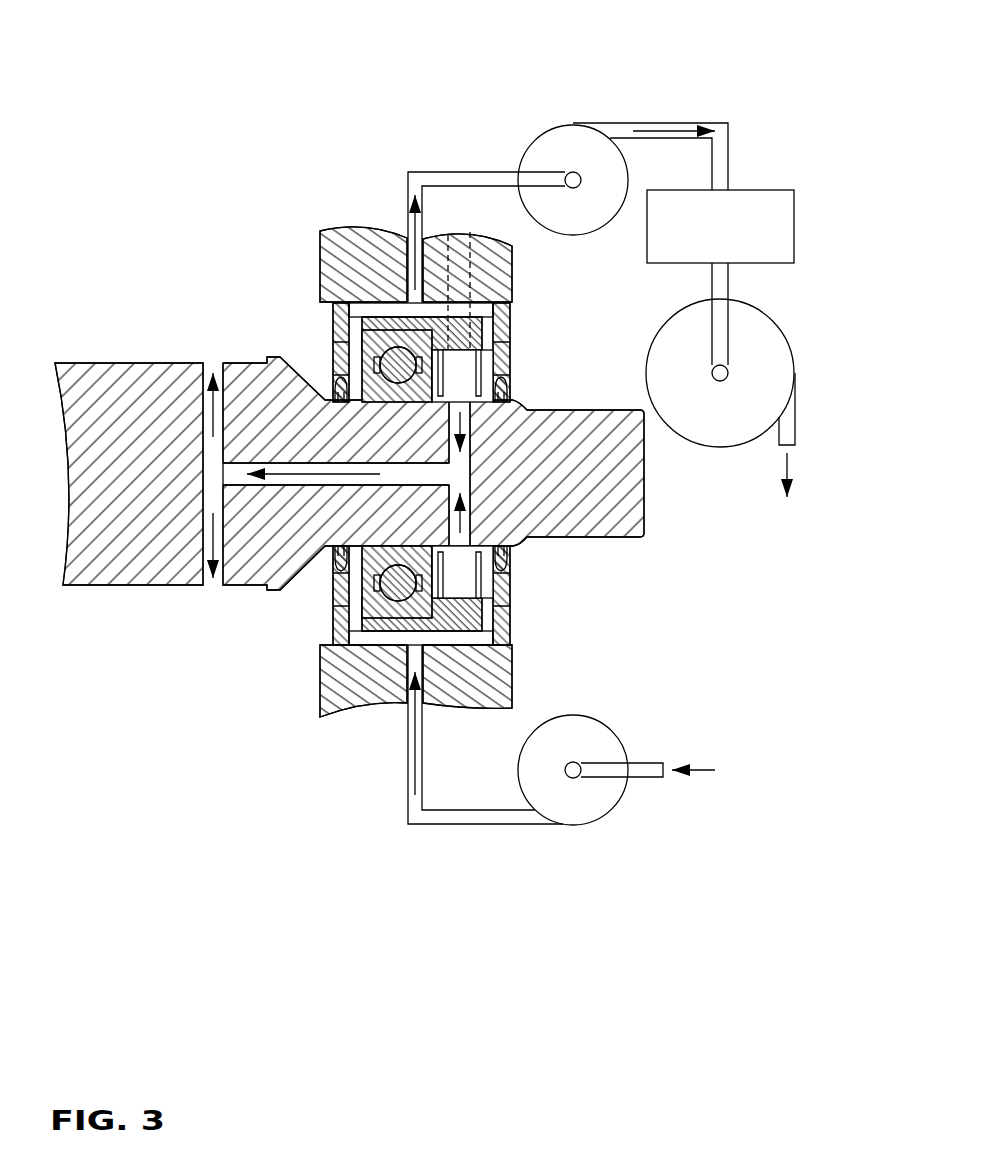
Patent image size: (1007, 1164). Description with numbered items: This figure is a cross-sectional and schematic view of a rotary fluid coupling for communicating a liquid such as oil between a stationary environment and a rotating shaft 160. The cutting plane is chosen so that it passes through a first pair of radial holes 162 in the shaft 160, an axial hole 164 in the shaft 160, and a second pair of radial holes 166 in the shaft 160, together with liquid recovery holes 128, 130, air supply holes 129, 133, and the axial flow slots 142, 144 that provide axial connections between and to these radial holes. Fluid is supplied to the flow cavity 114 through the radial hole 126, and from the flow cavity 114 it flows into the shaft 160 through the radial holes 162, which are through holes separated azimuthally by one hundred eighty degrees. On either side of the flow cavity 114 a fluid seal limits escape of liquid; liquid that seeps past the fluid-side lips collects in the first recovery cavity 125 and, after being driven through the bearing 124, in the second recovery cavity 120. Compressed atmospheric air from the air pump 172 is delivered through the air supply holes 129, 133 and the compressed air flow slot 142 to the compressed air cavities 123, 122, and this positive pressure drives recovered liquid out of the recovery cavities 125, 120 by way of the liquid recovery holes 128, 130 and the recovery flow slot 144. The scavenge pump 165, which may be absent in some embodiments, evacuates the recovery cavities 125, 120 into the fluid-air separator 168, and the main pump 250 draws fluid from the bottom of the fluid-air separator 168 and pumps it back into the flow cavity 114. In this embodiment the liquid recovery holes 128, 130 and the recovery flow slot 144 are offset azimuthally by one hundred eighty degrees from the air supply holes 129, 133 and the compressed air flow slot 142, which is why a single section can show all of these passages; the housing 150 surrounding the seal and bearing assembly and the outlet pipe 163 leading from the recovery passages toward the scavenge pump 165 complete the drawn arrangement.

The flow cavity 114 is at (450, 375).
The second recovery cavity 120 is at (355, 590).
The second compressed air cavity 122 is at (337, 390).
The first compressed air cavity 123 is at (506, 390).
The bearing 124 is at (410, 340).
The first recovery cavity 125 is at (483, 592).
The radial hole 126 is at (457, 280).
The liquid recovery hole 128 is at (487, 323).
The air supply hole 129 is at (340, 580).
The liquid recovery hole 130 is at (355, 337).
The air supply hole 133 is at (437, 613).
The compressed air flow slot 142 is at (497, 637).
The recovery flow slot 144 is at (365, 312).
The housing 150 is at (330, 257).
The shaft 160 is at (650, 496).
The first pair of radial holes 162 is at (456, 468).
The outlet pipe 163 is at (500, 170).
The axial hole 164 is at (307, 480).
The scavenge pump 165 is at (570, 133).
The second pair of radial holes 166 is at (212, 587).
The fluid-air separator 168 is at (745, 202).
The air pump 172 is at (625, 798).
The main pump 250 is at (750, 345).